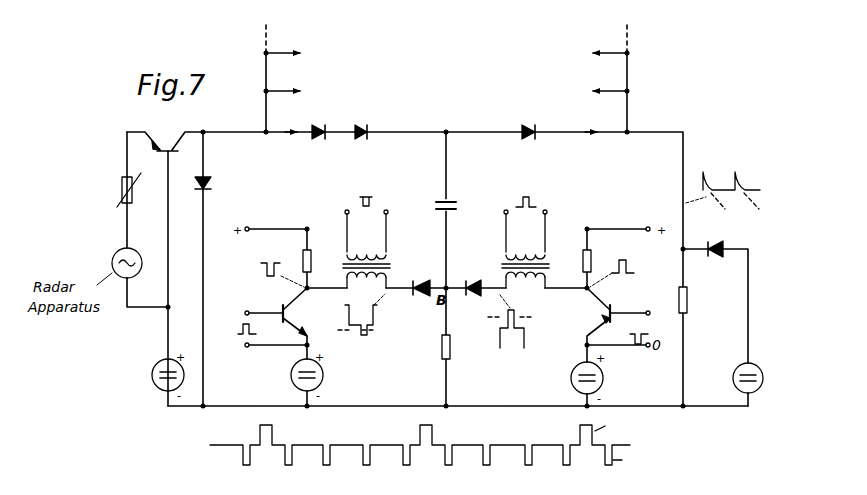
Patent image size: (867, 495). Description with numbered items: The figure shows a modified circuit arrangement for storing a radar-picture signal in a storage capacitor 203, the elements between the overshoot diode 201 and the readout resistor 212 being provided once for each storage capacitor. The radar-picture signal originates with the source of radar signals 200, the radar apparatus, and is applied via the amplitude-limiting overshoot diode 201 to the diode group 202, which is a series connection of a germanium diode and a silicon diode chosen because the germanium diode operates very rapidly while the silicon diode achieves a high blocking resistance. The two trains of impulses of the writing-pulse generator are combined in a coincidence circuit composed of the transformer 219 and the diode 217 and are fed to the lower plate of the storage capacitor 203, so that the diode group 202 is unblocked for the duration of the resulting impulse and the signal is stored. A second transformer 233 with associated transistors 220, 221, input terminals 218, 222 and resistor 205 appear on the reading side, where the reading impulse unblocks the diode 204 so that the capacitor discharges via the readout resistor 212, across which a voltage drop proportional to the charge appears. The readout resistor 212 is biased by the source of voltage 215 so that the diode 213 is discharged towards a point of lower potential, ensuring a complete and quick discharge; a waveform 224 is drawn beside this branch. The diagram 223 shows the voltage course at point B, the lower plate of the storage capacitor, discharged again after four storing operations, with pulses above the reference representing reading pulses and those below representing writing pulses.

The source of radar signals 200 is at (131, 233).
The overshoot diode 201 is at (218, 269).
The diode group 202 is at (339, 137).
The storage capacitor 203 is at (460, 207).
The diode 204 is at (527, 137).
The resistor 205 is at (432, 347).
The readout resistor 212 is at (698, 300).
The diode 213 is at (715, 293).
The source of voltage 215 is at (735, 379).
The diode 217 is at (443, 279).
The pulse input terminal 218 is at (271, 343).
The transformer 219 is at (366, 242).
The transistor 220 is at (279, 316).
The transistor 221 is at (614, 316).
The pulse input terminal 222 is at (620, 348).
The diagram 223 is at (416, 445).
The sawtooth waveform 224 is at (723, 181).
The transformer 233 is at (525, 242).